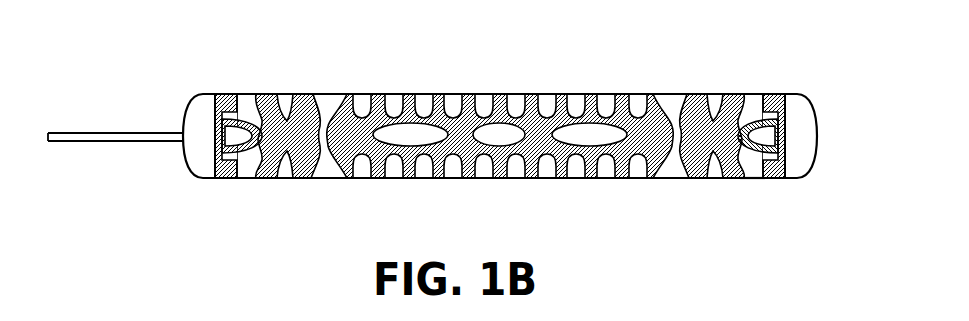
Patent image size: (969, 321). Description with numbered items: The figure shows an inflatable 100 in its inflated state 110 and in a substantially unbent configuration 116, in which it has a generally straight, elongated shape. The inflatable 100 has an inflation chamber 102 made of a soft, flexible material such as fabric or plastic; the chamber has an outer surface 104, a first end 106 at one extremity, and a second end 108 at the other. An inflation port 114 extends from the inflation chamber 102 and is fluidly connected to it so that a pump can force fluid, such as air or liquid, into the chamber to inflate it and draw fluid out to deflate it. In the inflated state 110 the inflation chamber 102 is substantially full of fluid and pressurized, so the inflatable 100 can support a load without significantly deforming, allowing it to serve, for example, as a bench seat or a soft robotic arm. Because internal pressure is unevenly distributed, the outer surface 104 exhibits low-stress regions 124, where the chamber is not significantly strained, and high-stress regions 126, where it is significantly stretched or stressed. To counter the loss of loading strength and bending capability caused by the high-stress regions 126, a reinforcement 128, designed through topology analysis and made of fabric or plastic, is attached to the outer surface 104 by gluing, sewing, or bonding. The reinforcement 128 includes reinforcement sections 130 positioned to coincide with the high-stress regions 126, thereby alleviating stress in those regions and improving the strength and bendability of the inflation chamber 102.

The inflatable 100 is at (190, 101).
The inflation chamber 102 is at (215, 95).
The outer surface 104 is at (247, 94).
The first end 106 is at (196, 178).
The second end 108 is at (818, 130).
The inflated state 110 is at (757, 94).
The inflation port 114 is at (175, 140).
The unbent configuration 116 is at (753, 190).
The low-stress regions 124 is at (322, 168).
The high-stress regions 126 is at (298, 94).
The reinforcement 128 is at (535, 94).
The reinforcement sections 130 is at (261, 179).